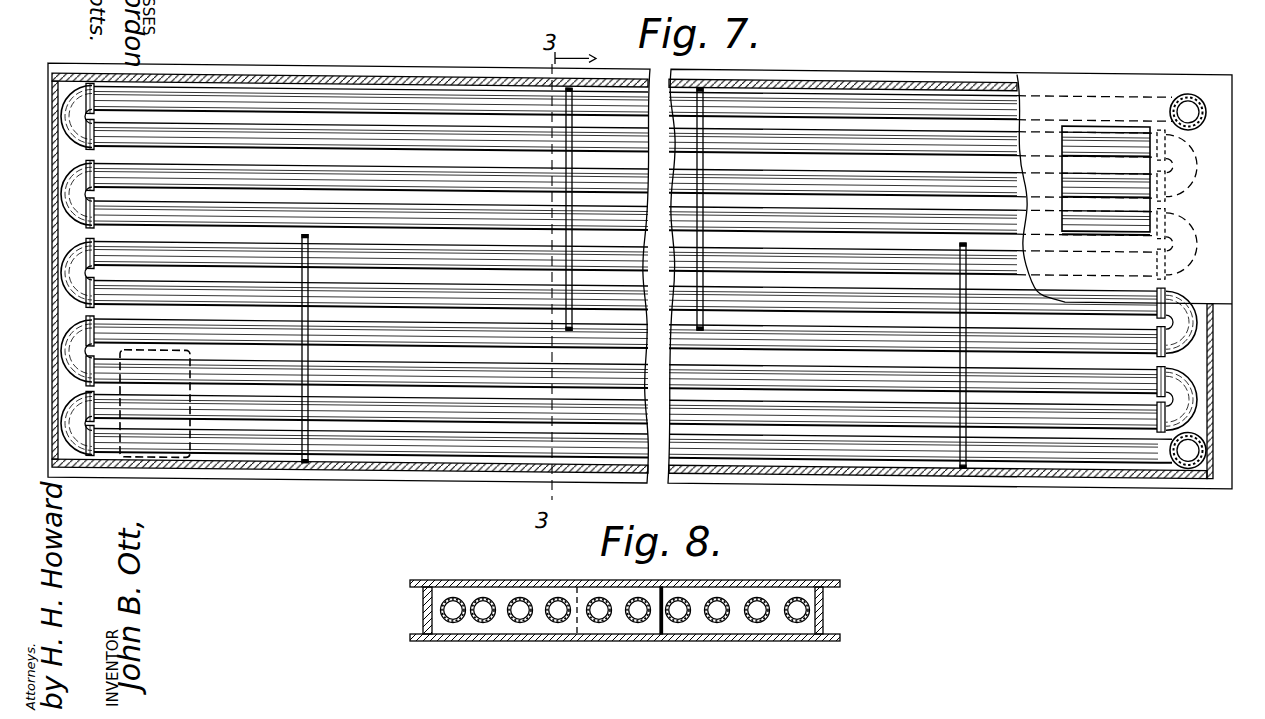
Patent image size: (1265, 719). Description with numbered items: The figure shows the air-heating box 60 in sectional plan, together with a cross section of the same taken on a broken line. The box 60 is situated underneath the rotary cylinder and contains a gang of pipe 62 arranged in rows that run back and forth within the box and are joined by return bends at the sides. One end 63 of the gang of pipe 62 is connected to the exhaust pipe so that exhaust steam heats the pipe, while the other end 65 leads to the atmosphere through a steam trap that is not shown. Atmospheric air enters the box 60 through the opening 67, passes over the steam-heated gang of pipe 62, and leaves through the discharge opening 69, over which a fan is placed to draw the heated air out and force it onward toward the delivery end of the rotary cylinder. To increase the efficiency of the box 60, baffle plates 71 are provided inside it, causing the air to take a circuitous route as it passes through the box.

In FIG. 7, the box 60 is at (899, 69).
In FIG. 8, the box 60 is at (497, 582).
In FIG. 7, the gang of pipe 62 is at (813, 439).
In FIG. 8, the gang of pipe 62 is at (757, 617).
In FIG. 7, the end of pipe gang 63 is at (1188, 96).
In FIG. 7, the end of pipe gang 65 is at (1190, 452).
In FIG. 7, the opening 67 is at (165, 451).
In FIG. 7, the discharge opening 69 is at (1094, 121).
In FIG. 7, the baffle plates 71 is at (307, 387).
In FIG. 8, the baffle plates 71 is at (537, 625).